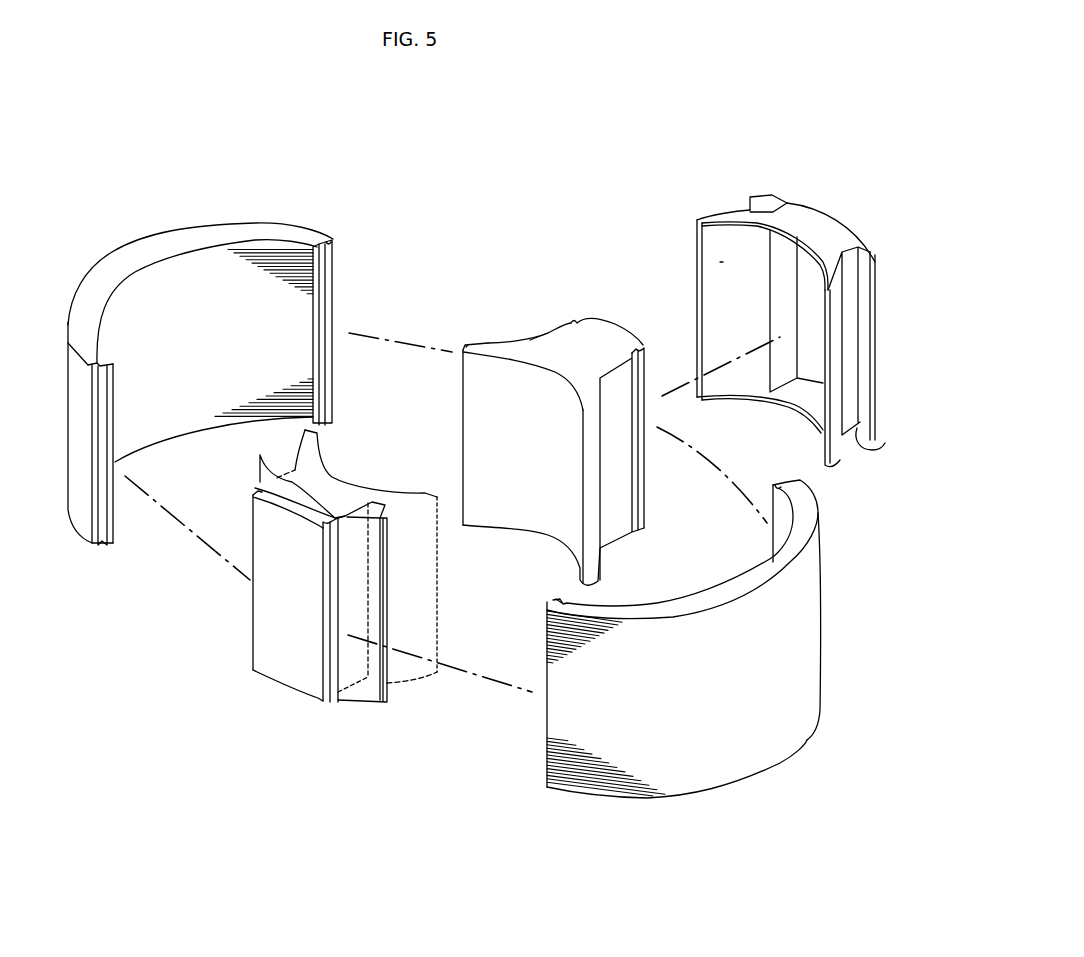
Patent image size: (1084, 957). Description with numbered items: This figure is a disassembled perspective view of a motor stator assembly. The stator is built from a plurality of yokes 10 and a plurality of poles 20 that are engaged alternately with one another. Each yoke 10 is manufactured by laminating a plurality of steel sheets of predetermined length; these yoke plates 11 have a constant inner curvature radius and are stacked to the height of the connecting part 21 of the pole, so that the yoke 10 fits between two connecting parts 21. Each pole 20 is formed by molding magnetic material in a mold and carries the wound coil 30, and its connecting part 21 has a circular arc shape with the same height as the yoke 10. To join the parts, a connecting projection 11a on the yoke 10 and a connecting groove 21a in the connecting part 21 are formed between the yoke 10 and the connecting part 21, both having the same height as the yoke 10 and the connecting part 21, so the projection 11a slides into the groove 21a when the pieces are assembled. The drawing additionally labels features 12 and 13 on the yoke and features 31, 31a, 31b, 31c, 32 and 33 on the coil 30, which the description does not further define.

The yoke 10 is at (434, 504).
The yoke plate 11 is at (597, 332).
The connecting projection 11a is at (634, 352).
The arc face of magnet 12 is at (547, 341).
The end portion of magnet 13 is at (483, 344).
The pole 20 is at (487, 521).
The connecting part 21 is at (213, 234).
The connecting groove 21a is at (332, 240).
The coil 30 is at (597, 400).
The holder body 31 is at (827, 225).
The inner wall of holder 31a is at (808, 360).
The holder side wall 31b is at (716, 266).
The holder hook 31c is at (866, 451).
The holder flange 32 is at (868, 247).
The holder top tab 33 is at (725, 211).